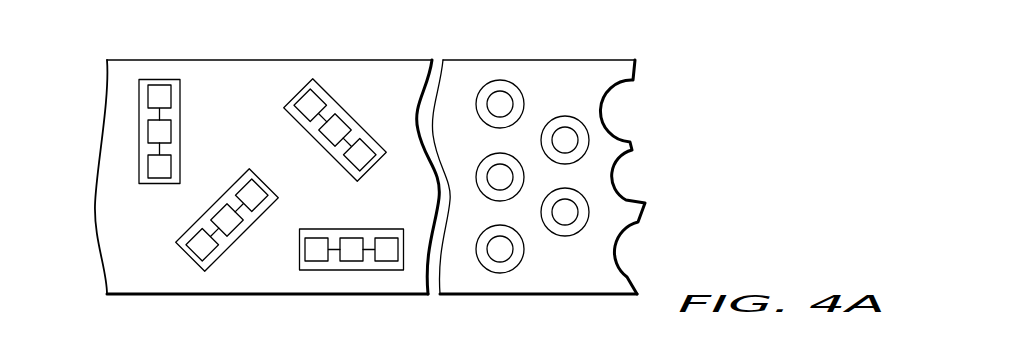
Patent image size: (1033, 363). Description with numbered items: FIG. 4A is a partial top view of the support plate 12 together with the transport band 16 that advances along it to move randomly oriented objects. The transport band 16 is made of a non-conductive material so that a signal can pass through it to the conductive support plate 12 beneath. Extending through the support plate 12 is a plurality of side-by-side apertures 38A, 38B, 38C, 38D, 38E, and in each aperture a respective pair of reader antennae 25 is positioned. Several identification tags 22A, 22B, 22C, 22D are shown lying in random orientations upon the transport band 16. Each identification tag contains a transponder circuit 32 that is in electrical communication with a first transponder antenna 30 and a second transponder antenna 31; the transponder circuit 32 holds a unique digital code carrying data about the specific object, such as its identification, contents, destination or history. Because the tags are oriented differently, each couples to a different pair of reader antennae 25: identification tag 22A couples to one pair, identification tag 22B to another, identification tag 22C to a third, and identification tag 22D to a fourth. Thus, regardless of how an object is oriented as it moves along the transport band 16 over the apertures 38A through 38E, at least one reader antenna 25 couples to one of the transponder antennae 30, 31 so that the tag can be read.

The support plate 12 is at (608, 70).
The transport band 16 is at (262, 70).
The identification tag 22A is at (158, 80).
The identification tag 22B is at (320, 147).
The identification tag 22C is at (195, 222).
The identification tag 22D is at (355, 229).
The reader antenna 25 is at (507, 98).
The first transponder antenna 30 is at (148, 97).
The second transponder antenna 31 is at (148, 170).
The transponder circuit 32 is at (148, 131).
The aperture 38A is at (495, 86).
The aperture 38B is at (488, 158).
The aperture 38C is at (488, 268).
The aperture 38D is at (562, 115).
The aperture 38E is at (560, 236).